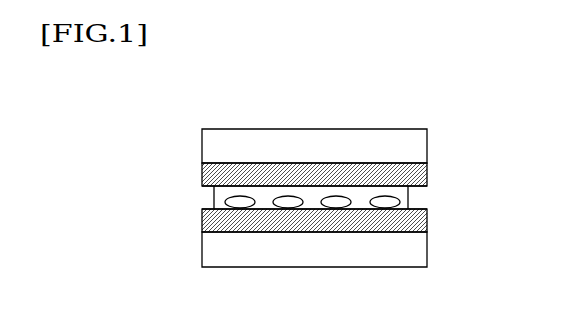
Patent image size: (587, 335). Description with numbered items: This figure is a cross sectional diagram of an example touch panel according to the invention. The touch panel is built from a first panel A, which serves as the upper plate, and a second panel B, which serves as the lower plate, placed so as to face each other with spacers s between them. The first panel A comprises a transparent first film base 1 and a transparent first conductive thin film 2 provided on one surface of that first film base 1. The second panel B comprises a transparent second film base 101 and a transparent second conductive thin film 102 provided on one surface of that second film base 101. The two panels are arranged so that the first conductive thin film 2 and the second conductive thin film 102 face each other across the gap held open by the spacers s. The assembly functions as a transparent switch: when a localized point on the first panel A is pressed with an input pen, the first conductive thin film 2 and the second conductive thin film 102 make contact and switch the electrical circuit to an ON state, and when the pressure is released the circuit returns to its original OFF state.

The first film base 1 is at (427, 144).
The first conductive thin film 2 is at (427, 177).
The second conductive thin film 102 is at (427, 223).
The second film base 101 is at (427, 247).
The spacers s is at (331, 202).
The first panel A is at (462, 124).
The second panel B is at (459, 288).